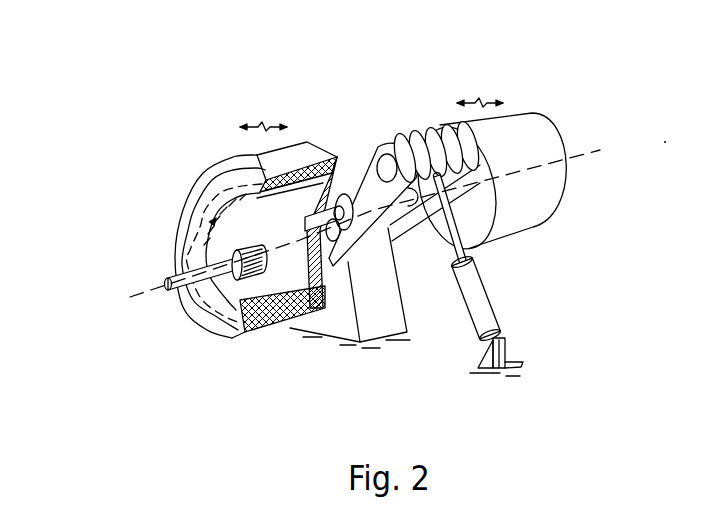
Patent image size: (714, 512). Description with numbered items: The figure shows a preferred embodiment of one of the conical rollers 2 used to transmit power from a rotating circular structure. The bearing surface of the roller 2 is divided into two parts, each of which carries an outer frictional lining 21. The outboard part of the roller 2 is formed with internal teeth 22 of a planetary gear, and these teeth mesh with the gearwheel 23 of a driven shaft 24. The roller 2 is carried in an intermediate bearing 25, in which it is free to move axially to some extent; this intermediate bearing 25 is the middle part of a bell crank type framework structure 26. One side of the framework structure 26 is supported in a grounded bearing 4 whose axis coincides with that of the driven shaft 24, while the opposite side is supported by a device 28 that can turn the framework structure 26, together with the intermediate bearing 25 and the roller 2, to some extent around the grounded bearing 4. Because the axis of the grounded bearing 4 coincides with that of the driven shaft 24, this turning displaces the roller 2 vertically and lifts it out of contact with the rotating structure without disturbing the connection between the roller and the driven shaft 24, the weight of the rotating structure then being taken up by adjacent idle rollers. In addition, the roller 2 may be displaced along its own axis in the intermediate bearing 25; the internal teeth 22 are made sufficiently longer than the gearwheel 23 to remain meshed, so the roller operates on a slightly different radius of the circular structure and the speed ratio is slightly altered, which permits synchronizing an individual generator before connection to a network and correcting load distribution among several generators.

The conical roller 2 is at (266, 89).
The grounded bearing 4 is at (394, 278).
The outer frictional lining 21 is at (318, 150).
The internal teeth 22 is at (226, 248).
The gearwheel 23 is at (224, 245).
The driven shaft 24 is at (176, 303).
The intermediate bearing 25 is at (403, 215).
The bell crank type framework structure 26 is at (371, 175).
The device 28 is at (488, 302).